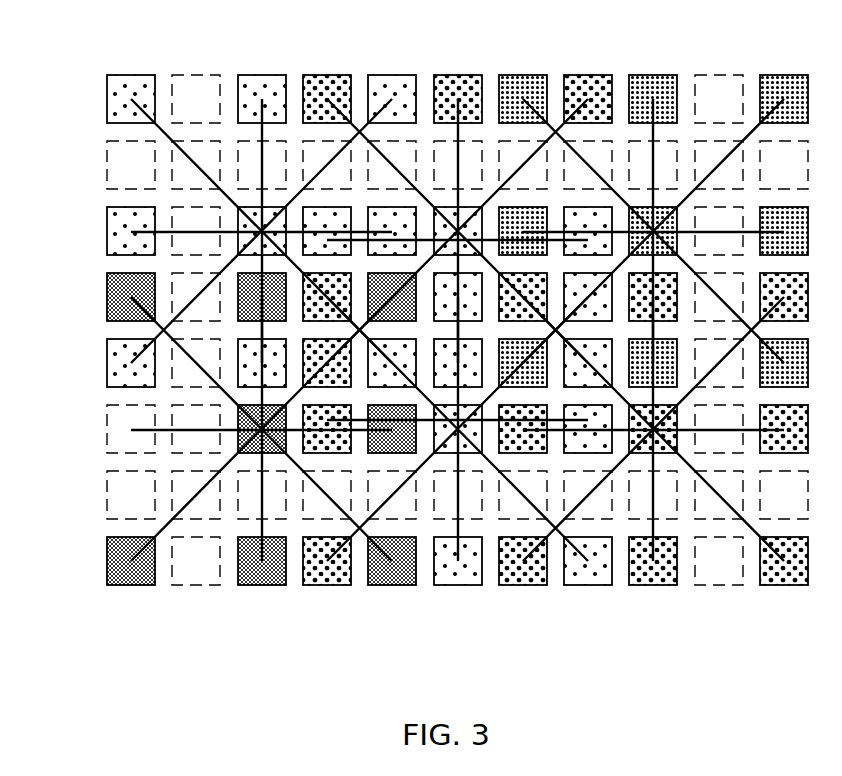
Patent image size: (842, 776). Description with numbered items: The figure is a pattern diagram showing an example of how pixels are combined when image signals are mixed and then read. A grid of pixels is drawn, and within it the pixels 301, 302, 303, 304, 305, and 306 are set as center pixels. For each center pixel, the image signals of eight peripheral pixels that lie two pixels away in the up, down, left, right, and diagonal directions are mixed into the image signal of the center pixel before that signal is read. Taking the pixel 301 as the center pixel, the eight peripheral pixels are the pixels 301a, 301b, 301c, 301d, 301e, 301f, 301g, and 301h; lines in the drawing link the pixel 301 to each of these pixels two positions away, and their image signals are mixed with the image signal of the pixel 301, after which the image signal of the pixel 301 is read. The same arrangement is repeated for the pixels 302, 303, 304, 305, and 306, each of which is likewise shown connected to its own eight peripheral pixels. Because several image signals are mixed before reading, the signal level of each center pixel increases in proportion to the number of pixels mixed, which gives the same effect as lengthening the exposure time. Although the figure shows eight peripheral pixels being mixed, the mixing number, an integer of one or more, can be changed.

The pixel 301 is at (250, 208).
The pixel 301a is at (124, 76).
The pixel 301b is at (265, 76).
The pixel 301c is at (397, 76).
The pixel 301d is at (108, 217).
The pixel 301e is at (402, 208).
The pixel 301f is at (108, 349).
The pixel 301g is at (253, 387).
The pixel 301h is at (368, 370).
The pixel 302 is at (457, 210).
The pixel 303 is at (647, 208).
The pixel 304 is at (265, 458).
The pixel 305 is at (470, 456).
The pixel 306 is at (663, 452).